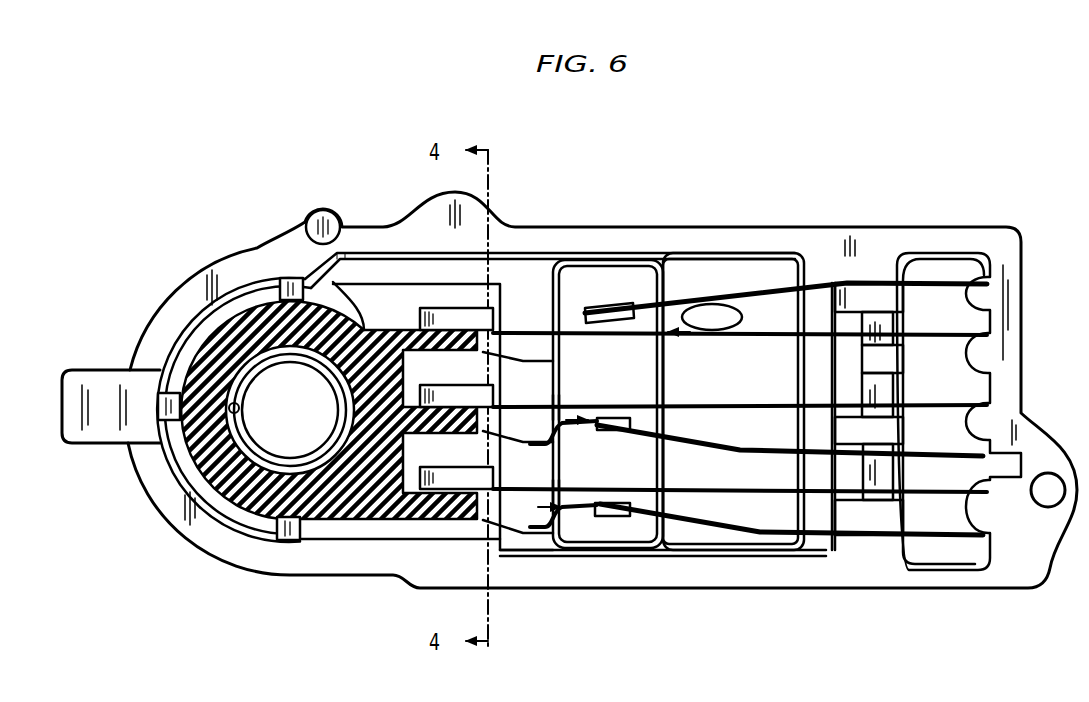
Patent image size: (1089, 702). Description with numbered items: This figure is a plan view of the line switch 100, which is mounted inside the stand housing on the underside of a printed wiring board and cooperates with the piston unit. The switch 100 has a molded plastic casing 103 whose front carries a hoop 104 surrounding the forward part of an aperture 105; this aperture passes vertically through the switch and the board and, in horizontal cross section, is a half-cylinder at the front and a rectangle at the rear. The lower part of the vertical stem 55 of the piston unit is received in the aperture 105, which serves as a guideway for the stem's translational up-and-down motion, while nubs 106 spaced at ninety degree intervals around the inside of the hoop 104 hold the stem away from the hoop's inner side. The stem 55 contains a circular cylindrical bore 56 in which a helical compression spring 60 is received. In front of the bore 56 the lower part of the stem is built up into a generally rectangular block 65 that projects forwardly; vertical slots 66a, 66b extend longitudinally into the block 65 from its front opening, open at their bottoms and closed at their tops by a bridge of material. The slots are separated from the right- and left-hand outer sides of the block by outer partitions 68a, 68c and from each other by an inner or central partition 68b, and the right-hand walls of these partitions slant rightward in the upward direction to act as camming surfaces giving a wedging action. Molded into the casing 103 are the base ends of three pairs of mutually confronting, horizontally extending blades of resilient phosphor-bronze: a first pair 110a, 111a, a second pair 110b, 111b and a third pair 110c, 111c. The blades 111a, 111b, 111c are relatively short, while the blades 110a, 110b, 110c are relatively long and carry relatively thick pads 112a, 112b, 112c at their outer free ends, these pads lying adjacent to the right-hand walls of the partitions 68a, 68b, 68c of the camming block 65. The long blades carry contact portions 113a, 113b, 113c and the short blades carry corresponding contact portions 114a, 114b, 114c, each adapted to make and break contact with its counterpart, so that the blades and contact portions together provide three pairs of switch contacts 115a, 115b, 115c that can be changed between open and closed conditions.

The vertical stem 55 is at (203, 350).
The circular cylindrical bore 56 is at (232, 416).
The helical compression spring 60 is at (184, 516).
The block 65 is at (401, 519).
The vertical slot 66a is at (421, 372).
The vertical slot 66b is at (378, 520).
The outer partition 68a is at (498, 352).
The inner or central partition 68b is at (484, 428).
The outer partition 68c is at (411, 523).
The line switch 100 is at (794, 216).
The molded plastic casing 103 is at (893, 243).
The hoop 104 is at (160, 492).
The aperture 105 is at (332, 300).
The nubs 106 is at (290, 278).
The long blade 110a is at (533, 330).
The long blade 110b is at (588, 406).
The long blade 110c is at (586, 492).
The short blade 111a is at (701, 310).
The short blade 111b is at (698, 441).
The short blade 111c is at (745, 538).
The pad 112a is at (476, 323).
The pad 112b is at (474, 402).
The pad 112c is at (478, 484).
The contact portion 113a is at (643, 339).
The contact portion 113b is at (642, 411).
The contact portion 113c is at (706, 498).
The contact portion 114a is at (614, 310).
The contact portion 114b is at (706, 440).
The contact portion 114c is at (613, 516).
The pair of switch contacts 115a is at (728, 331).
The pair of switch contacts 115b is at (566, 442).
The pair of switch contacts 115c is at (528, 520).